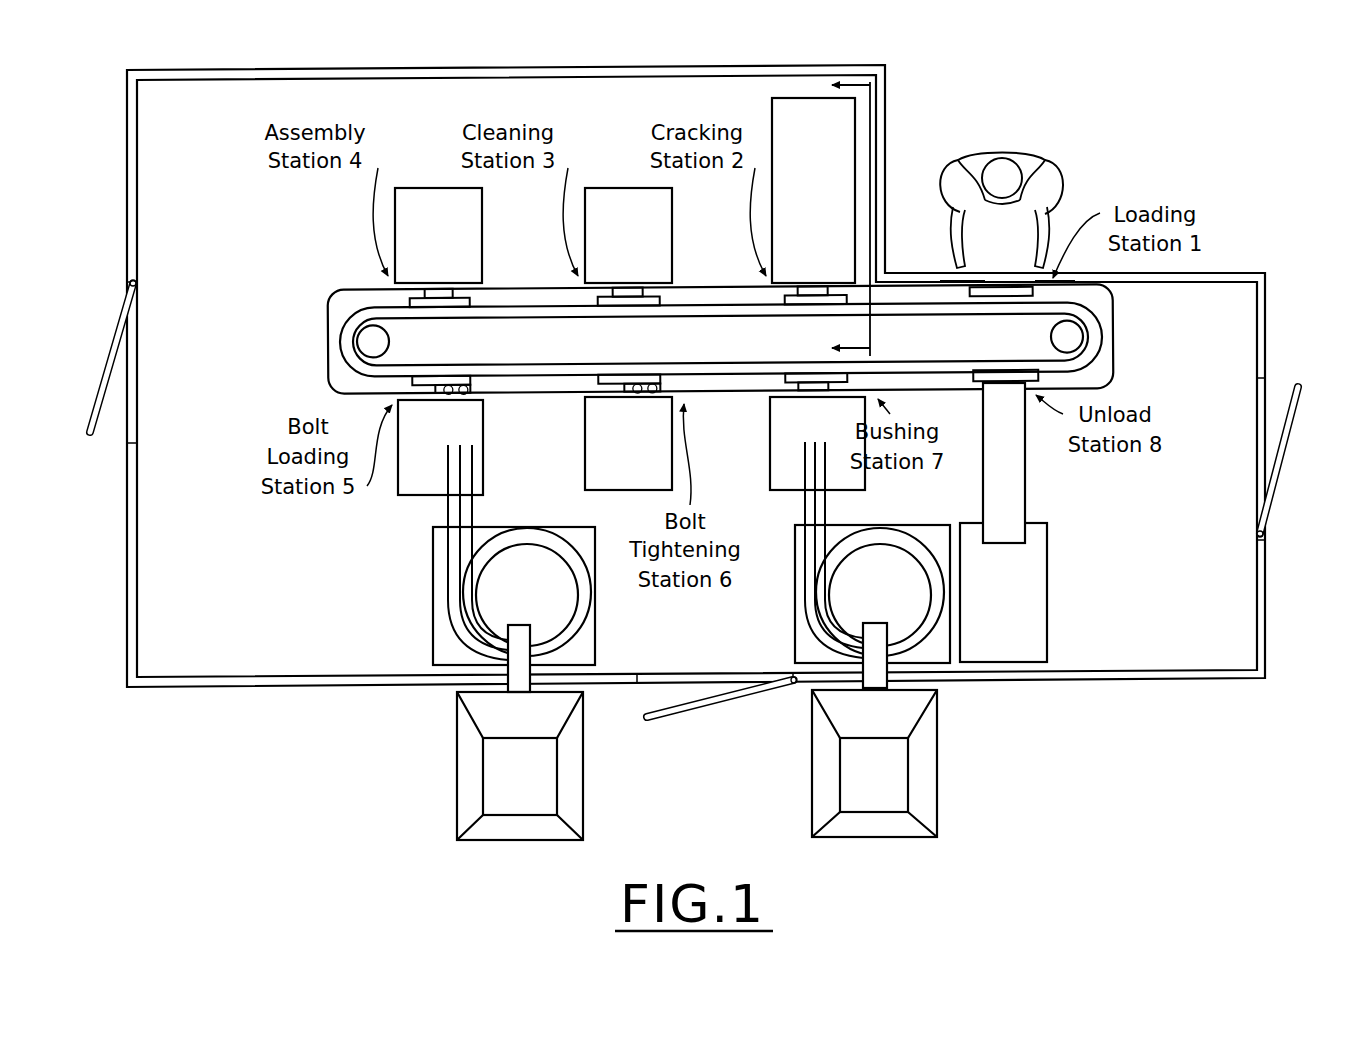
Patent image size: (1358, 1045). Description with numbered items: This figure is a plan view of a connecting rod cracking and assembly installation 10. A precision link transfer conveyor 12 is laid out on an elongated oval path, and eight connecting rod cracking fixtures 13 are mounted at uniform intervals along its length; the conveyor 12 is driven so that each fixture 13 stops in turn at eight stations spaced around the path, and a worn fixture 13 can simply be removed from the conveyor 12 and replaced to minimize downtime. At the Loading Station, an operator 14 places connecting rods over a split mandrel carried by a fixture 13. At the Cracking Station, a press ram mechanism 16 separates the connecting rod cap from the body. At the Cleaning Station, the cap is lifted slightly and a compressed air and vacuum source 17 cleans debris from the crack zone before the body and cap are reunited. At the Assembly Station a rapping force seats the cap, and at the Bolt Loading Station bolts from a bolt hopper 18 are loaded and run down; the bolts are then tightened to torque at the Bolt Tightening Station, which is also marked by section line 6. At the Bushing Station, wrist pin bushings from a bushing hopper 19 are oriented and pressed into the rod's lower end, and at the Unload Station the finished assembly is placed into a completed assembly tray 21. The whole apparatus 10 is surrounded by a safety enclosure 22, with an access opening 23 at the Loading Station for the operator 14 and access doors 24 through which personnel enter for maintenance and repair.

The section line 6- 6 is at (873, 221).
The connecting rod cracking and assembly installation 10 is at (952, 126).
The precision link transfer conveyor 12 is at (698, 319).
The connecting rod cracking fixtures 13 is at (440, 302).
The operator 14 is at (1045, 160).
The press ram mechanism 16 is at (823, 200).
The compressed air and vacuum source 17 is at (660, 233).
The bolt hopper 18 is at (495, 775).
The bushing hopper 19 is at (848, 760).
The completed assembly tray 21 is at (1033, 597).
The safety enclosure 22 is at (127, 145).
The access opening 23 is at (948, 280).
The access doors 24 is at (100, 377).